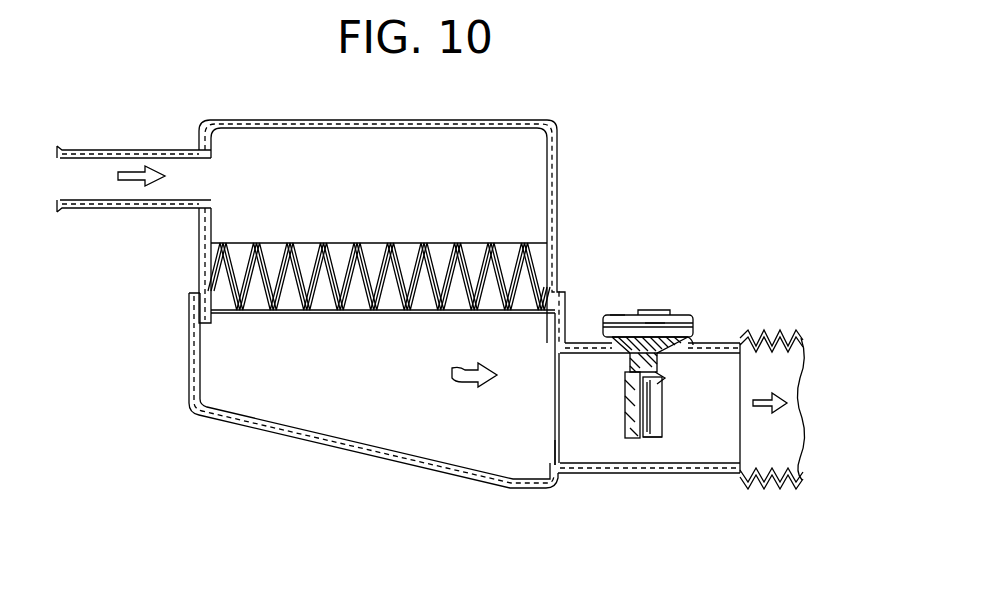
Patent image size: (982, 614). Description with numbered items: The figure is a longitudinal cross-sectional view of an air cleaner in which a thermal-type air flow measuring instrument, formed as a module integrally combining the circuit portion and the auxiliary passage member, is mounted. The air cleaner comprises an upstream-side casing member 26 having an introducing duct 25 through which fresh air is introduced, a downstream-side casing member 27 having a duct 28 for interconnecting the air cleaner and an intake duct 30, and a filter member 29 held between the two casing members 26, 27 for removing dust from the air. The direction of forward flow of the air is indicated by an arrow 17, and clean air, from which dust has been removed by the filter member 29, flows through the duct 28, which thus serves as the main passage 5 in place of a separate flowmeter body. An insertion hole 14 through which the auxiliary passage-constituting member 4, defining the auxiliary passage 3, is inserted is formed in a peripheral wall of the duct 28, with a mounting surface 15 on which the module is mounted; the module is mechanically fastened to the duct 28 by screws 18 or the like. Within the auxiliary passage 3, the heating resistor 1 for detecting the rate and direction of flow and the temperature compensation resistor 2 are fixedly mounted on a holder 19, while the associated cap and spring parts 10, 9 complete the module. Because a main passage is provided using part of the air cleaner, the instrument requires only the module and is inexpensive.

The heating resistor 1 is at (630, 378).
The temperature compensation resistor 2 is at (657, 380).
The auxiliary passage 3 is at (655, 400).
The auxiliary passage-constituting member 4 is at (665, 428).
The main passage 5 is at (563, 443).
The spring 9 is at (656, 318).
The cap 10 is at (620, 316).
The insertion hole 14 is at (610, 316).
The mounting surface 15 is at (695, 335).
The direction of flow 17 is at (137, 168).
The screws 18 is at (675, 314).
The holder 19 is at (636, 316).
The introducing duct 25 is at (83, 150).
The upstream-side casing member 26 is at (558, 155).
The downstream-side casing member 27 is at (189, 371).
The duct 28 is at (648, 475).
The filter member 29 is at (310, 243).
The intake duct 30 is at (793, 332).